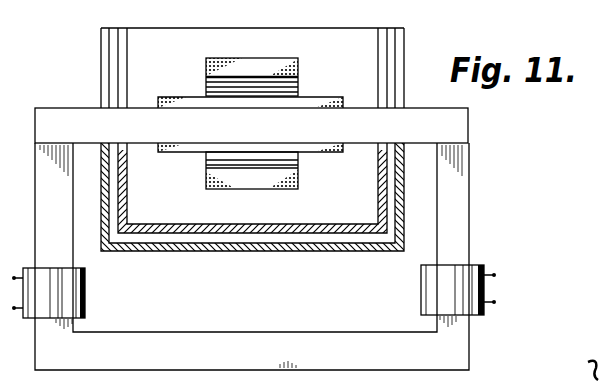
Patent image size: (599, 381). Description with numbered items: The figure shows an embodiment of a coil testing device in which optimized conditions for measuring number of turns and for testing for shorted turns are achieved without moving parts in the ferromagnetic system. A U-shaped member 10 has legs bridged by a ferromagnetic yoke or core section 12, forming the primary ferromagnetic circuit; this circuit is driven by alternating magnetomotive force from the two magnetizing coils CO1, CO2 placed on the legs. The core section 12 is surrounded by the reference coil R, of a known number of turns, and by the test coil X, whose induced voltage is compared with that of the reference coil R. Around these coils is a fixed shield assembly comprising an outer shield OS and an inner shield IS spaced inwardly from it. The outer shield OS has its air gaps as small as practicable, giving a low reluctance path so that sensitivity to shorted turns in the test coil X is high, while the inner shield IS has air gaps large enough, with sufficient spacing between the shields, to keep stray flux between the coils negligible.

The U-shaped member 10 is at (470, 207).
The core section 12 is at (469, 124).
The test coil X is at (281, 57).
The reference coil R is at (312, 97).
The magnetizing coil CO1 is at (85, 297).
The magnetizing coil CO2 is at (484, 265).
The outer shield OS is at (196, 252).
The inner shield IS is at (128, 205).